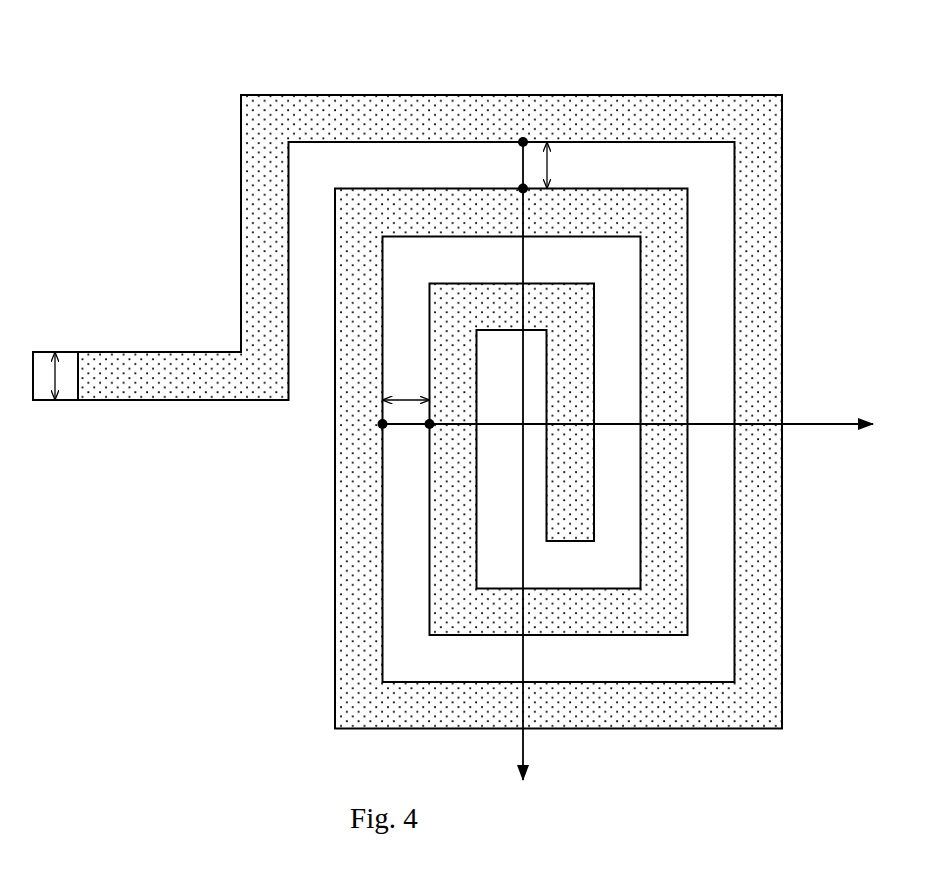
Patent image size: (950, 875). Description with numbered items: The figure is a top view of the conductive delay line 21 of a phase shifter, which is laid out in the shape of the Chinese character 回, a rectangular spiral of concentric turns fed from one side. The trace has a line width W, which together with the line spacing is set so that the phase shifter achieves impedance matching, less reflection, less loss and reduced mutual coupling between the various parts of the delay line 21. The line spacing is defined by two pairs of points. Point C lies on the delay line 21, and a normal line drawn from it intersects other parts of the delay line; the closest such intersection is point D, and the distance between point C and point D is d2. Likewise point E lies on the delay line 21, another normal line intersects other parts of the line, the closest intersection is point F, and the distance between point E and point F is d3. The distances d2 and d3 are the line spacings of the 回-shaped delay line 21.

The delay line 21 is at (115, 43).
The point C is at (519, 130).
The point D is at (515, 202).
The point E is at (370, 434).
The point F is at (442, 435).
The distance d2 is at (561, 165).
The distance d3 is at (406, 382).
The line width W is at (41, 376).